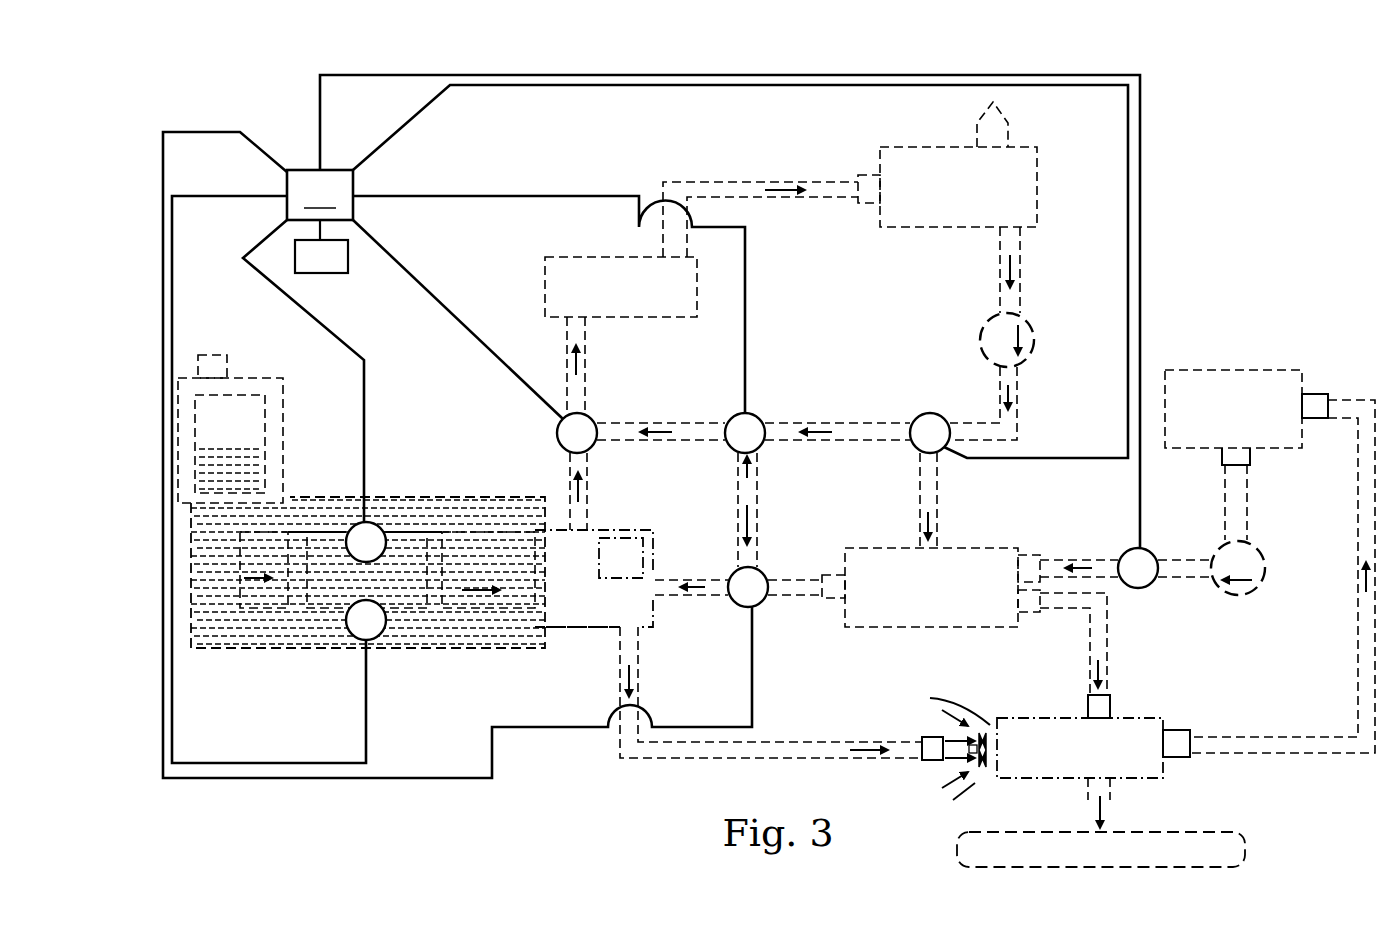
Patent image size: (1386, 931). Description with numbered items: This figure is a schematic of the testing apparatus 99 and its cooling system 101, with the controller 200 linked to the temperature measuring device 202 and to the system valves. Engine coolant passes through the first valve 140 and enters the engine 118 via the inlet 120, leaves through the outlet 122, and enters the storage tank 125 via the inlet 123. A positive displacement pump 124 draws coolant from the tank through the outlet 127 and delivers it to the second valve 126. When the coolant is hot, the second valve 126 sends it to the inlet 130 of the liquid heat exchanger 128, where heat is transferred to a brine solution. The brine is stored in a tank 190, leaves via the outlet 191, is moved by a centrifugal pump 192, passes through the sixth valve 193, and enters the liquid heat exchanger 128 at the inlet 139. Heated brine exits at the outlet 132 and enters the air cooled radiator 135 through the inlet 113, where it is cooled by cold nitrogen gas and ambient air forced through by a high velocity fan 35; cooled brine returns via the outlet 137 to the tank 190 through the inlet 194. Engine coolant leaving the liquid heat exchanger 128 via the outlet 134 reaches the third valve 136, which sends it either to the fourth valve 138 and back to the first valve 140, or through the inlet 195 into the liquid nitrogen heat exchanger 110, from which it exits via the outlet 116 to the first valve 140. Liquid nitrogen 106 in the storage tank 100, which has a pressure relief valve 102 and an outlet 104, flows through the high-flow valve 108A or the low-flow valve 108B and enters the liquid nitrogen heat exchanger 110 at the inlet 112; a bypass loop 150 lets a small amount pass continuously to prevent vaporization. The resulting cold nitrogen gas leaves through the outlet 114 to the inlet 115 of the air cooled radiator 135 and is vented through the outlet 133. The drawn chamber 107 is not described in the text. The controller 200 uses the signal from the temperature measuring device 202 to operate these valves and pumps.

The testing apparatus 99 is at (1178, 240).
The storage tank 100 is at (283, 378).
The cooling system 101 is at (603, 683).
The pressure relief valve 102 is at (213, 355).
The outlet 104 is at (282, 500).
The liquid nitrogen 106 is at (268, 445).
The fuel chamber 107 is at (252, 648).
The high-flow valve 108A is at (370, 522).
The low-flow valve 108B is at (357, 640).
The liquid nitrogen heat exchanger 110 is at (598, 627).
The inlet 112 is at (512, 640).
The inlet 113 is at (1108, 708).
The outlet 114 is at (645, 660).
The inlet 115 is at (938, 737).
The outlet 116 is at (570, 510).
The engine 118 is at (545, 260).
The inlet 120 is at (556, 330).
The outlet 122 is at (662, 242).
The inlet 123 is at (860, 172).
The positive displacement pump 124 is at (1031, 315).
The storage tank 125 is at (955, 147).
The second valve 126 is at (929, 412).
The outlet 127 is at (995, 240).
The liquid heat exchanger 128 is at (843, 550).
The inlet 130 is at (918, 530).
The outlet 132 is at (1037, 620).
The outlet 133 is at (1108, 800).
The outlet 134 is at (832, 600).
The air cooled radiator 135 is at (1160, 768).
The third valve 136 is at (746, 608).
The outlet 137 is at (1186, 732).
The fourth valve 138 is at (746, 412).
The inlet 139 is at (1037, 555).
The first valve 140 is at (558, 428).
The bypass loop 150 is at (617, 538).
The tank 190 is at (1218, 370).
The outlet 191 is at (1248, 465).
The centrifugal pump 192 is at (1258, 542).
The sixth valve 193 is at (1138, 548).
The inlet 194 is at (1315, 370).
The inlet 195 is at (668, 570).
The controller 200 is at (651, 426).
The temperature measuring device 202 is at (322, 274).
The high velocity fan 35 is at (978, 722).